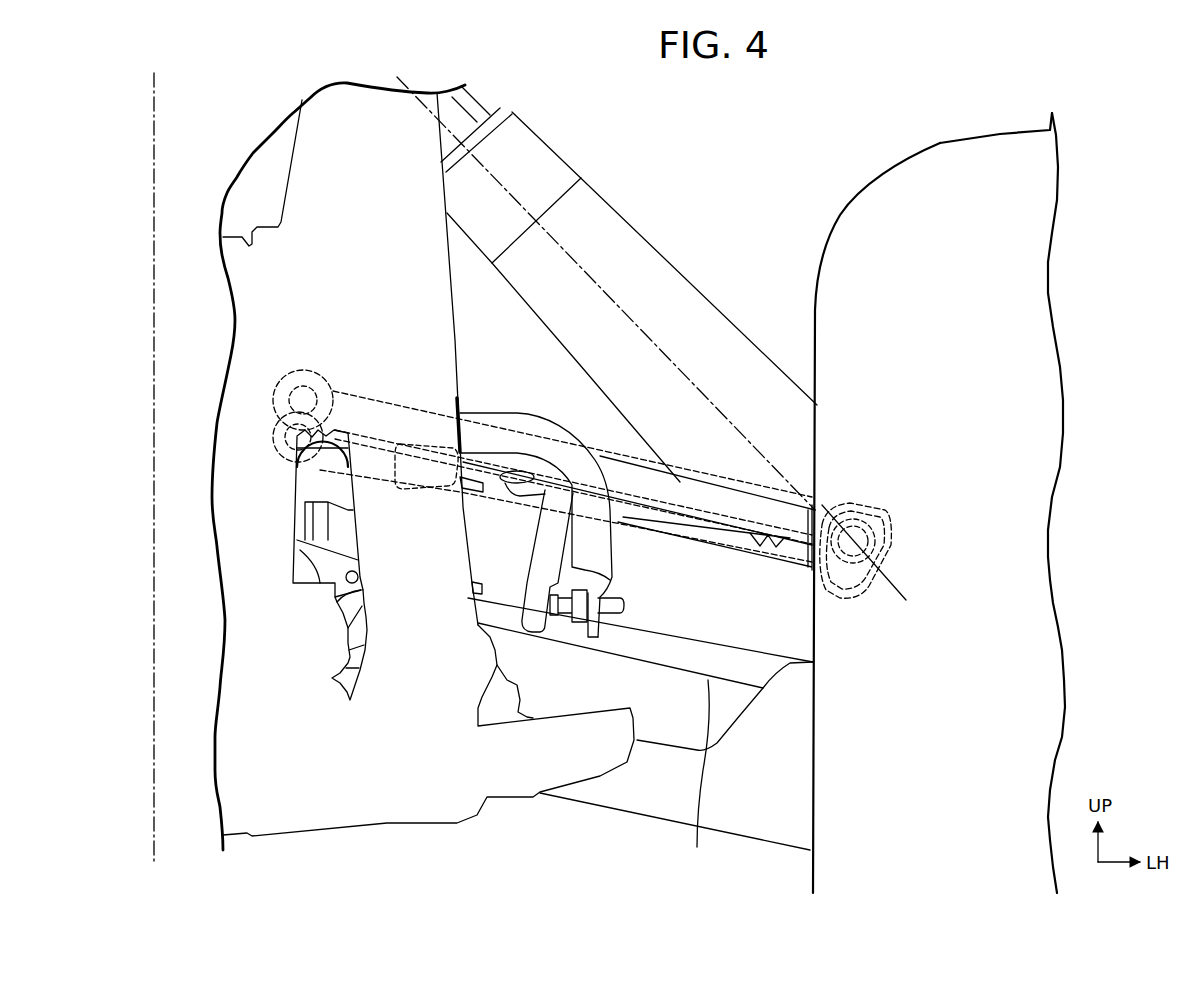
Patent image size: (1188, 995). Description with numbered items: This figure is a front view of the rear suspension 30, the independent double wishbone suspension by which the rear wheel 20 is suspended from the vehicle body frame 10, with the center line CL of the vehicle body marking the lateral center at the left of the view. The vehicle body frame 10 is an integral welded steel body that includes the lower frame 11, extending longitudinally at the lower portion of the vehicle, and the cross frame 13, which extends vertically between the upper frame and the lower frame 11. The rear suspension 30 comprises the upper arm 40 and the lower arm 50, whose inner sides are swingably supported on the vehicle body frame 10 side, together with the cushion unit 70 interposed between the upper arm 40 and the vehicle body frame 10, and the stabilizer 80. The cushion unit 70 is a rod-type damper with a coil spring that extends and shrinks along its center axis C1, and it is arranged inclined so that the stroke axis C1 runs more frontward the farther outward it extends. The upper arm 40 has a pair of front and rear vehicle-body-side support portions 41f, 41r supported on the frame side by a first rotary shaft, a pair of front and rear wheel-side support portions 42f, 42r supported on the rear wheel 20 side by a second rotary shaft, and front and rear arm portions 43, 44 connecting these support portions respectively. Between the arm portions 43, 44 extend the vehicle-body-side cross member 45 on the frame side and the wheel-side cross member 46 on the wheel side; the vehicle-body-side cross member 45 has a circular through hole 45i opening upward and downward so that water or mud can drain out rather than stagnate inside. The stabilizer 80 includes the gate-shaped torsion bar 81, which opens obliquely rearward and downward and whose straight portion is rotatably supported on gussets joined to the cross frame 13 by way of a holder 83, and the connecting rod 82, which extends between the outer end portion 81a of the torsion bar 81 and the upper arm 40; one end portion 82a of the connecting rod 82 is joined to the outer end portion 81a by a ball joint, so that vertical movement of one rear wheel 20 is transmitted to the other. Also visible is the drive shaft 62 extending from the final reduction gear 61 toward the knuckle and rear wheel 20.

The vehicle body frame 10 is at (387, 826).
The lower frame 11 is at (477, 818).
The cross frame 13 is at (454, 330).
The rear wheel 20 is at (940, 143).
The rear suspension 30 is at (641, 138).
The upper arm 40 is at (630, 460).
The front vehicle-body-side support portion 41f is at (306, 370).
The rear vehicle-body-side support portion 41r is at (286, 458).
The front wheel-side support portion 42f is at (876, 500).
The rear wheel-side support portion 42r is at (845, 594).
The front arm portion 43 is at (668, 482).
The rear arm portion 44 is at (740, 550).
The vehicle-body-side cross member 45 is at (491, 493).
The through hole 45i is at (473, 510).
The wheel-side cross member 46 is at (672, 520).
The lower arm 50 is at (648, 824).
The final reduction gear 61 is at (343, 550).
The drive shaft 62 is at (698, 779).
The cushion unit 70 is at (657, 245).
The stabilizer 80 is at (614, 547).
The torsion bar 81 is at (523, 413).
The outer end portion of the torsion bar 81a is at (603, 635).
The connecting rod 82 is at (615, 587).
The one end portion of the connecting rod 82a is at (534, 625).
The holder 83 is at (460, 400).
The center axis (stroke axis) C1 is at (407, 80).
The center line CL is at (156, 90).